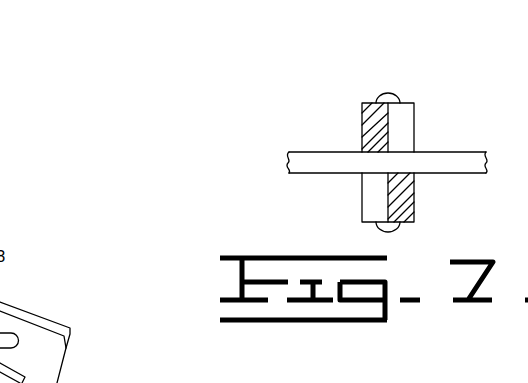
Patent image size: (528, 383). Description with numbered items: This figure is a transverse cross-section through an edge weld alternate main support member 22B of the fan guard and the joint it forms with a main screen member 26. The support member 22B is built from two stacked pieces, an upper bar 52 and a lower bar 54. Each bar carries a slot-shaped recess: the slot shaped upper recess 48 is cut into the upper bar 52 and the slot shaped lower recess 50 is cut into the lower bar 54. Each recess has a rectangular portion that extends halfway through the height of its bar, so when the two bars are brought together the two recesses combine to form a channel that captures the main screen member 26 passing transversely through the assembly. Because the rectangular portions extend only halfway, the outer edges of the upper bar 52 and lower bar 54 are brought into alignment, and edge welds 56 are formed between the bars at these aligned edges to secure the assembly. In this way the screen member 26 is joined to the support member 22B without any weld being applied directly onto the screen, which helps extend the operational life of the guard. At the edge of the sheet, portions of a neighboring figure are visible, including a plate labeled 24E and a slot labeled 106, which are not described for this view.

The edge weld alternate main support member 22B is at (385, 140).
The main screen member 26 is at (287, 170).
The slot shaped upper recess 48 is at (370, 200).
The slot shaped lower recess 50 is at (407, 128).
The upper bar 52 is at (367, 130).
The lower bar 54 is at (408, 203).
The edge weld 56 is at (392, 93).
The slot 106 is at (5, 333).
The plate 24E is at (76, 379).